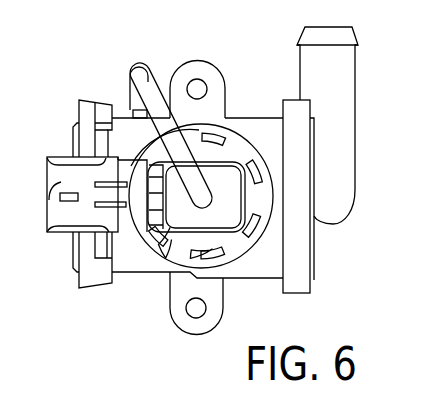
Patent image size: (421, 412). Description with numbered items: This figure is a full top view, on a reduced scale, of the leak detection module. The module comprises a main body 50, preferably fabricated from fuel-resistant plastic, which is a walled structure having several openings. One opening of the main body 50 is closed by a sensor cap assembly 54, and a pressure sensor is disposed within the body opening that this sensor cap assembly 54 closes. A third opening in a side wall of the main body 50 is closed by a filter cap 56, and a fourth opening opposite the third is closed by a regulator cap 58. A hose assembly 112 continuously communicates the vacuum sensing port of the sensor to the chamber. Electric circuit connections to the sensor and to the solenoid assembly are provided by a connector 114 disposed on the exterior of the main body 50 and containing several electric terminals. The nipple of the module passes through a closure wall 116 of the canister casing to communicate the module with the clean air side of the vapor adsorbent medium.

The main body 50 is at (258, 124).
The sensor cap assembly 54 is at (185, 258).
The filter cap 56 is at (303, 250).
The regulator cap 58 is at (93, 100).
The hose assembly 112 is at (155, 95).
The connector 114 is at (48, 198).
The closure wall 116 is at (199, 59).